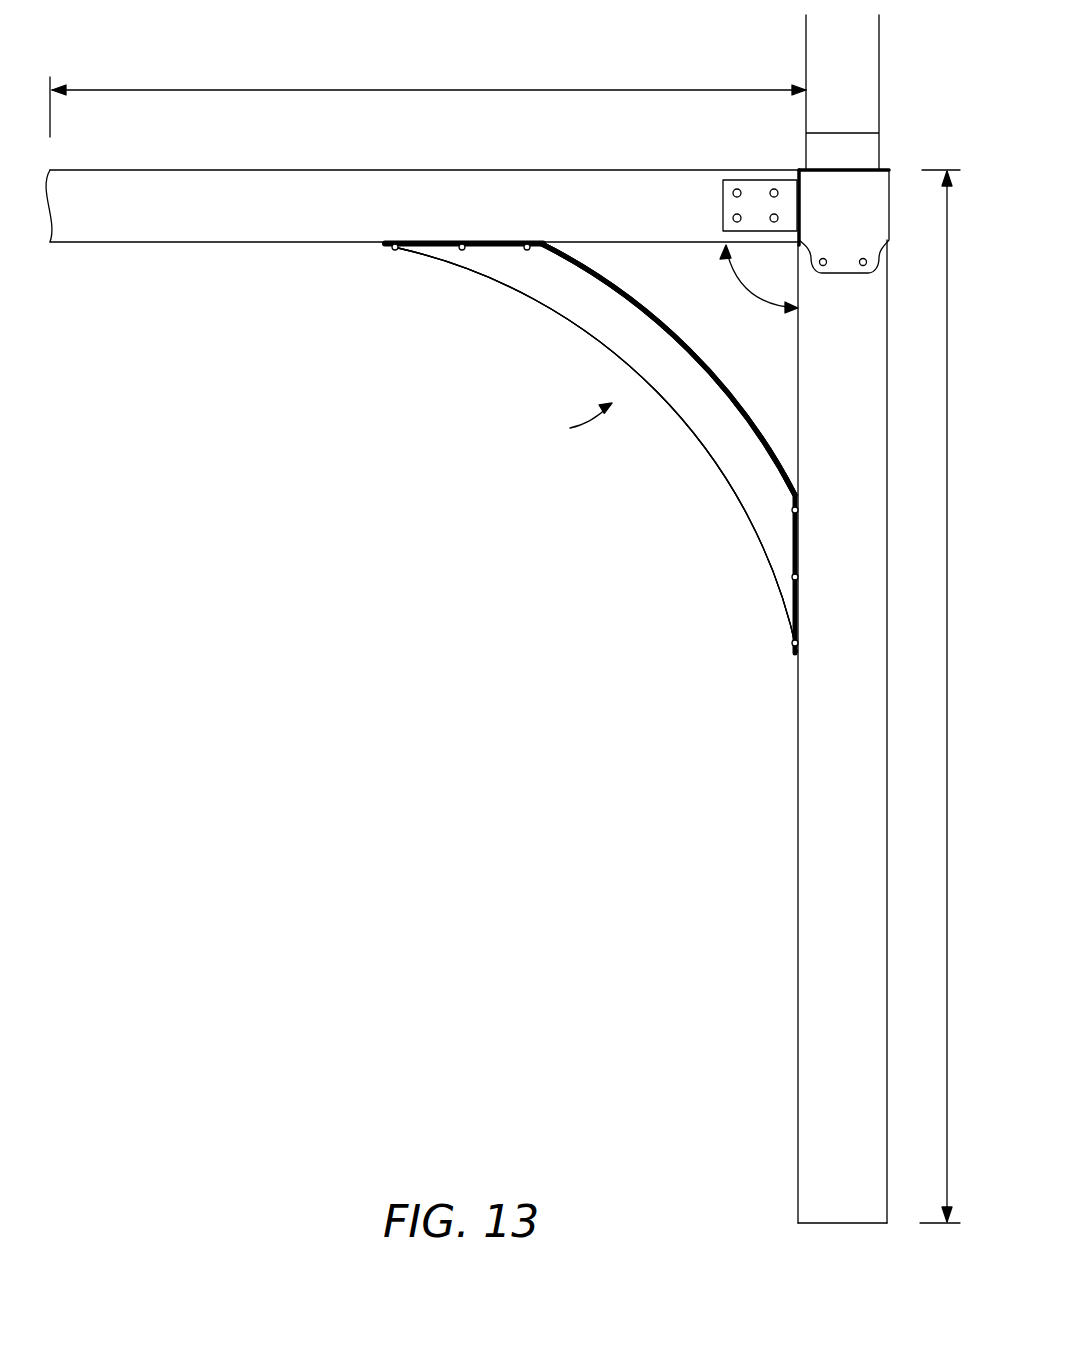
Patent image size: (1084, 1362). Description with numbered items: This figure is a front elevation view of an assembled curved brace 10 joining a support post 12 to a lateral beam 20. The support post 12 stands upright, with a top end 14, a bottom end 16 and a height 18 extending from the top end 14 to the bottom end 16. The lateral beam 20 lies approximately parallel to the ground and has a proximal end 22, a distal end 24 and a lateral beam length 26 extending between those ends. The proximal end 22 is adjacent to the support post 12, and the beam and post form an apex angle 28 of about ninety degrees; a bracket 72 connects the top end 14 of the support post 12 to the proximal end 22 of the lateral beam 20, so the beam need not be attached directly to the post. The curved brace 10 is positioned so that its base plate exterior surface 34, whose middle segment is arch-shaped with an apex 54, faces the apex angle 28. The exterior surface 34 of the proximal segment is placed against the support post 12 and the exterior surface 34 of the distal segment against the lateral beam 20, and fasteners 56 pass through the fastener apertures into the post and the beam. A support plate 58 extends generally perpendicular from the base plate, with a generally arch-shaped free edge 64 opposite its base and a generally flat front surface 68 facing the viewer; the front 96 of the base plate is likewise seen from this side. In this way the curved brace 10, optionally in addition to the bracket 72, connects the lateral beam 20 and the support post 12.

The curved brace 10 is at (577, 425).
The support post 12 is at (878, 578).
The top end 14 is at (889, 182).
The bottom end 16 is at (885, 1221).
The height 18 is at (946, 450).
The lateral beam 20 is at (193, 215).
The proximal end 22 is at (797, 178).
The distal end 24 is at (53, 182).
The lateral beam length 26 is at (485, 90).
The apex angle 28 is at (746, 290).
The base plate exterior surface 34 is at (742, 405).
The apex 54 is at (686, 342).
The fastener 56 is at (527, 249).
The support plate 58 is at (553, 295).
The free edge 64 is at (687, 430).
The front surface 68 is at (628, 348).
The bracket 72 is at (868, 205).
The front 96 is at (607, 277).